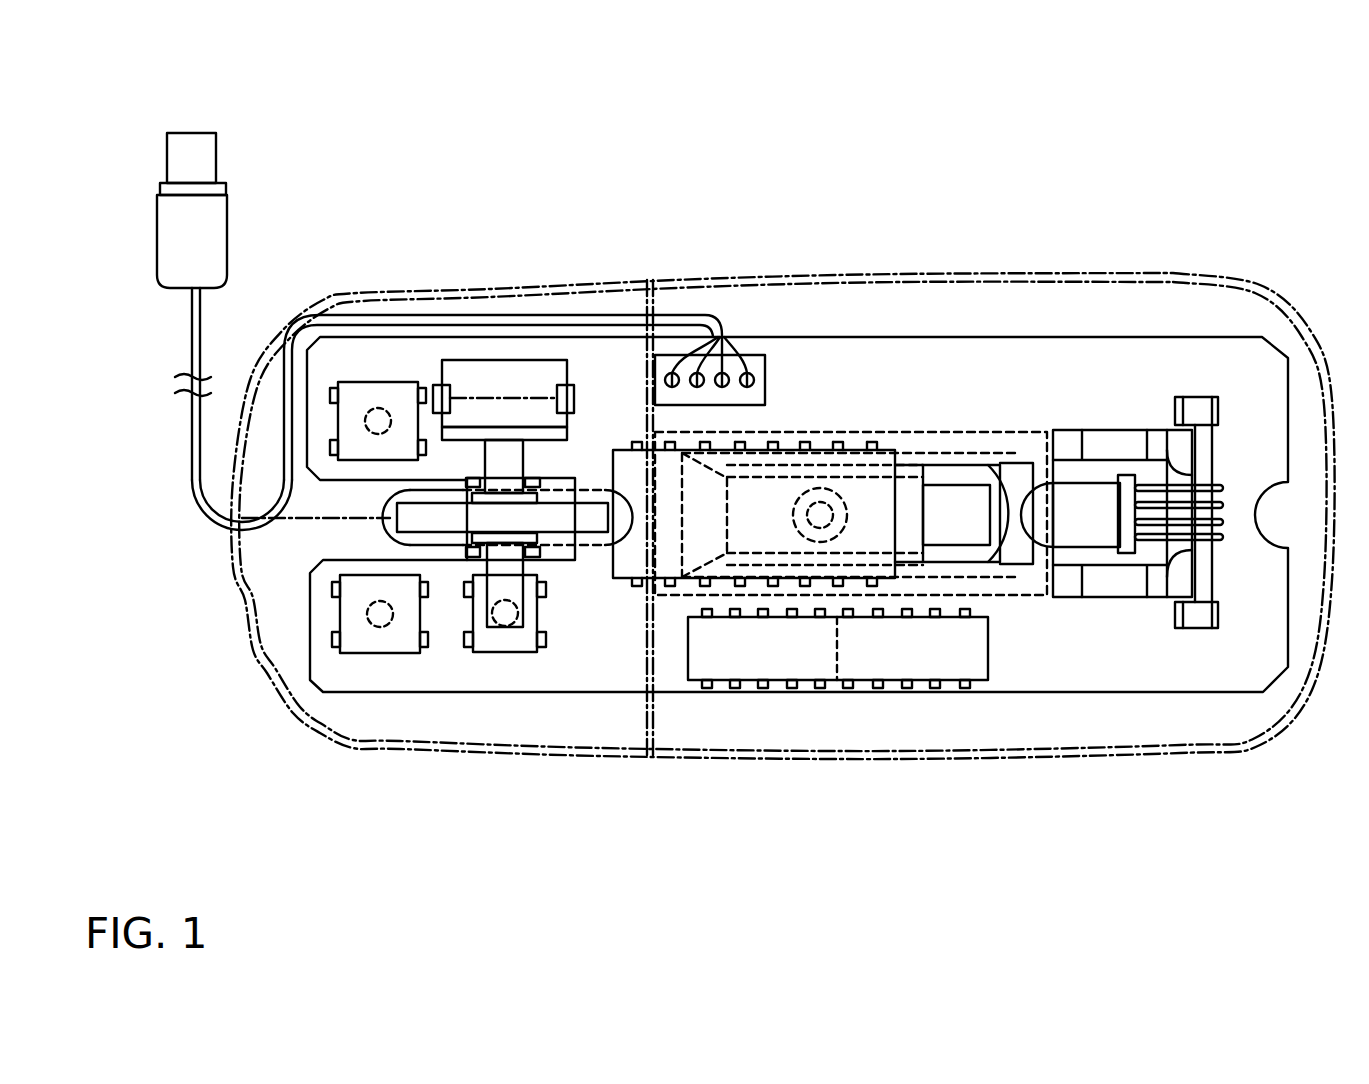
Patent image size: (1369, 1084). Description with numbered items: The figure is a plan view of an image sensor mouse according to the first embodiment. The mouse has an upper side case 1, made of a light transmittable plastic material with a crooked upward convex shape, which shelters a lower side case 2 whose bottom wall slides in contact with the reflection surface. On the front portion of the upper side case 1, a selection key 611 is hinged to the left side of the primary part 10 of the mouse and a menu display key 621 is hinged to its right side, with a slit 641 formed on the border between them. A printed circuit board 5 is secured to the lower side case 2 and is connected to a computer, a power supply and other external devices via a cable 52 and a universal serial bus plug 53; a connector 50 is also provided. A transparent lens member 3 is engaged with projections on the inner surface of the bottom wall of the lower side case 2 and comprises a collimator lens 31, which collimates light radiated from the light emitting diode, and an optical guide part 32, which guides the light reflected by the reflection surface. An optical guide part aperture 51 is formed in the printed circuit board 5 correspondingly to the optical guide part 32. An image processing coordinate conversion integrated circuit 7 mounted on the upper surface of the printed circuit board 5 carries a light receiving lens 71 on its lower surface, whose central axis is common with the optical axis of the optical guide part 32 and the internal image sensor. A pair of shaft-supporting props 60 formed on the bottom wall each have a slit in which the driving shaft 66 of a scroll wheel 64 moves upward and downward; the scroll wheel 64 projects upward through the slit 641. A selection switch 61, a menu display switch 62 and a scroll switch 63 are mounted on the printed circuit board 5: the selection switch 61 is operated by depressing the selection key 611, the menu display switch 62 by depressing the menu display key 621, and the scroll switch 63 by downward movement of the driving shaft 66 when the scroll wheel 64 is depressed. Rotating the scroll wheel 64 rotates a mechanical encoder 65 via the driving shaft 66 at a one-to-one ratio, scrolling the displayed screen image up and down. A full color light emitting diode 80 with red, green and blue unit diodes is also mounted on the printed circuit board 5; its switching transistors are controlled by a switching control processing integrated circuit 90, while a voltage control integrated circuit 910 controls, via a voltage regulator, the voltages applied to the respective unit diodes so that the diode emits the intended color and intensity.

The upper side case 1 is at (1168, 272).
The lower side case 2 is at (693, 717).
The lens member 3 is at (962, 525).
The printed circuit board 5 is at (828, 360).
The image processing coordinate conversion integrated circuit 7 is at (871, 493).
The primary part 10 is at (915, 385).
The collimator lens 31 is at (1000, 510).
The optical guide part 32 is at (820, 530).
The connector 50 is at (757, 363).
The optical guide part aperture 51 is at (682, 520).
The cable 52 is at (195, 357).
The universal serial bus plug 53 is at (168, 160).
The shaft-supporting props 60 is at (465, 543).
The selection switch 61 is at (377, 617).
The menu display switch 62 is at (377, 418).
The scroll switch 63 is at (510, 617).
The scroll wheel 64 is at (587, 518).
The mechanical encoder 65 is at (523, 377).
The driving shaft 66 is at (498, 587).
The light receiving lens 71 is at (835, 530).
The full color light emitting diode 80 is at (1095, 522).
The switching control processing integrated circuit 90 is at (754, 668).
The selection key 611 is at (277, 583).
The menu display key 621 is at (268, 432).
The slit 641 is at (603, 490).
The voltage control integrated circuit 910 is at (924, 668).